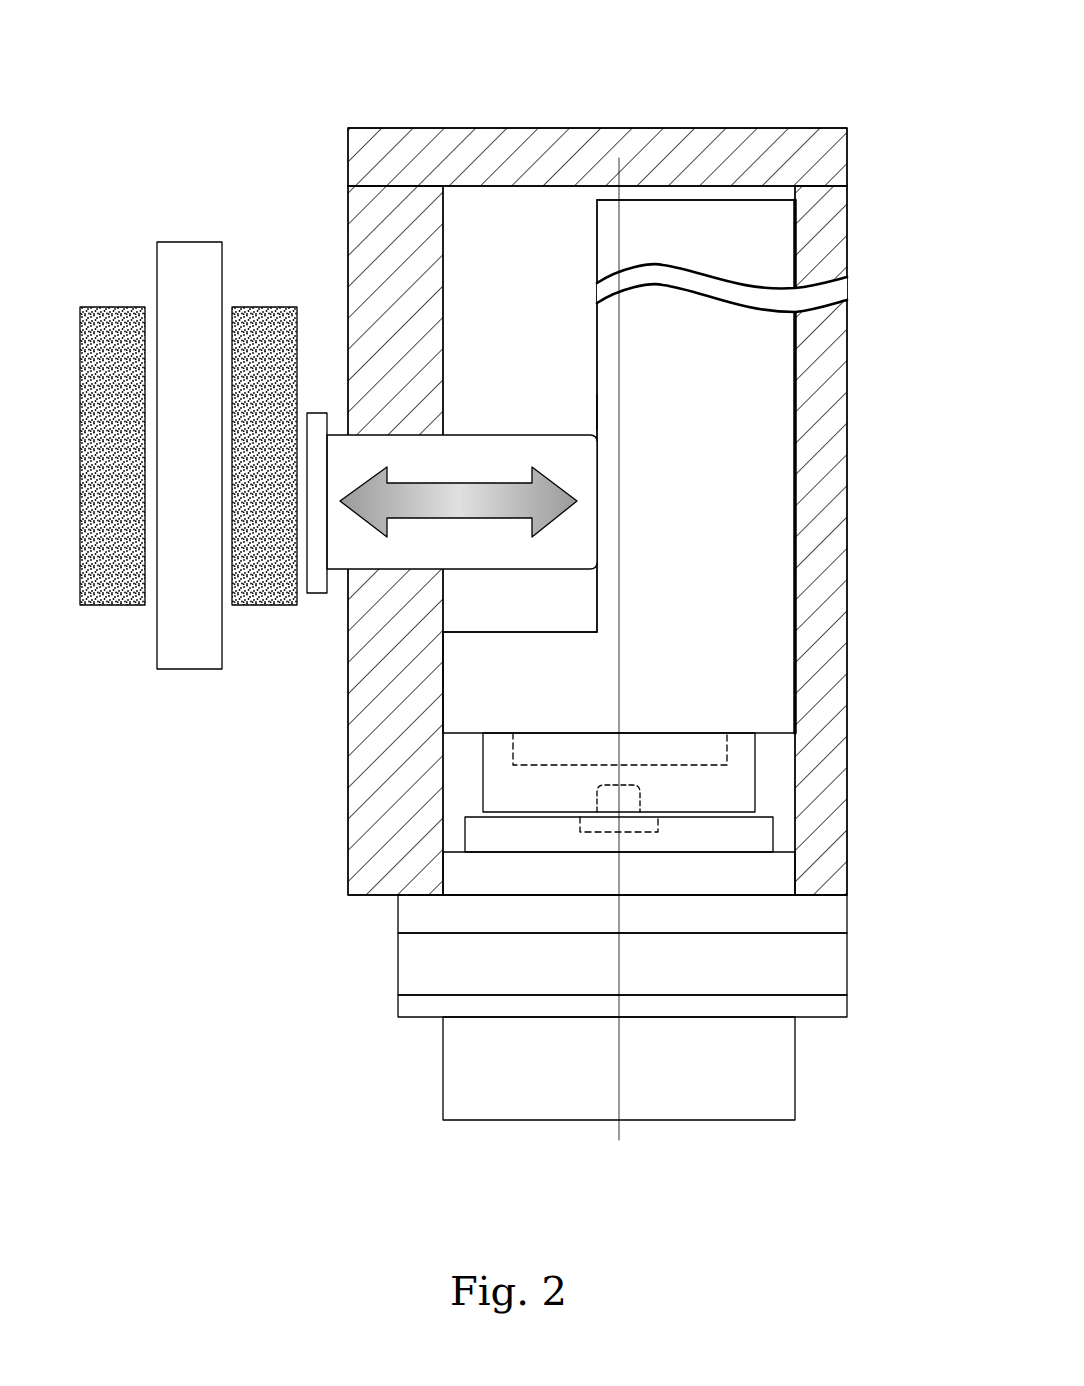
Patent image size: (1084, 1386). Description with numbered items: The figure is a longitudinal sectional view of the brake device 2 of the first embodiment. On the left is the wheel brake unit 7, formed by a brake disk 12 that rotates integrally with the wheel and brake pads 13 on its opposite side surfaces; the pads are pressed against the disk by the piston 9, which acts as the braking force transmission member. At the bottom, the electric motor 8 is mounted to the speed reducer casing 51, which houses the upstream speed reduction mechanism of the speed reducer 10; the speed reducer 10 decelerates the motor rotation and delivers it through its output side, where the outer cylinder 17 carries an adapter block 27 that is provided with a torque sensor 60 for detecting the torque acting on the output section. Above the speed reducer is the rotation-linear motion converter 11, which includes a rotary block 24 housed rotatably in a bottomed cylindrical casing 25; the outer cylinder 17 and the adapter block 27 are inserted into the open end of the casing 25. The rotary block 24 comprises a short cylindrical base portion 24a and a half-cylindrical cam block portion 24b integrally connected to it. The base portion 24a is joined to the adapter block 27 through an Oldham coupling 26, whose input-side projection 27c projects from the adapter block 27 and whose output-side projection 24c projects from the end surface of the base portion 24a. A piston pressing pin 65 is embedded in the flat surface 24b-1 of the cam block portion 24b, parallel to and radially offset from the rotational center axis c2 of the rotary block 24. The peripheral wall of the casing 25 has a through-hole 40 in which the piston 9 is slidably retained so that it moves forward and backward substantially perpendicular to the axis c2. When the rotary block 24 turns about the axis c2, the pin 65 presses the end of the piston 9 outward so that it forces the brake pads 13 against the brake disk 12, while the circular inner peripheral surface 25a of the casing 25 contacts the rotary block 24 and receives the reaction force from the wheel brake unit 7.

The brake device 2 is at (702, 84).
The wheel brake unit 7 is at (106, 296).
The electric motor 8 is at (442, 1068).
The piston 9 is at (372, 558).
The speed reducer 10 is at (849, 966).
The rotation-linear motion converter 11 is at (850, 467).
The brake disk 12 is at (183, 655).
The brake pads 13 is at (112, 607).
The outer cylinder 17 is at (783, 872).
The rotary block 24 is at (797, 661).
The base portion 24a is at (470, 682).
The cam block portion 24b is at (772, 233).
The flat surface 24b-1 is at (597, 368).
The output-side projection 24c is at (513, 748).
The casing 25 is at (822, 387).
The inner peripheral surface 25a is at (795, 373).
The Oldham coupling 26 is at (758, 772).
The adapter block 27 is at (763, 828).
The input-side projection 27c is at (603, 787).
The through-hole 40 is at (388, 452).
The speed reducer casing 51 is at (405, 968).
The torque sensor 60 is at (605, 835).
The piston pressing pin 65 is at (597, 412).
The rotational center axis c2 is at (619, 227).